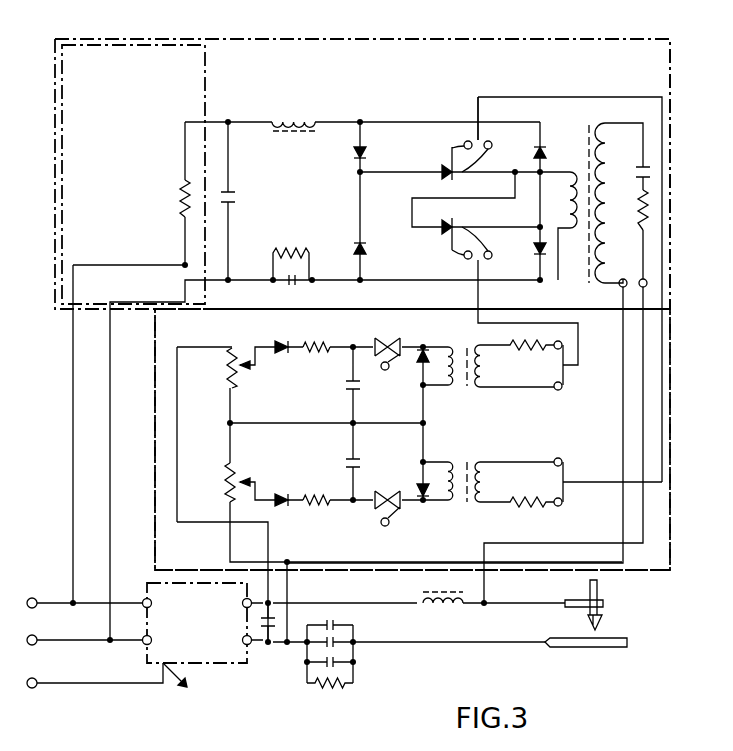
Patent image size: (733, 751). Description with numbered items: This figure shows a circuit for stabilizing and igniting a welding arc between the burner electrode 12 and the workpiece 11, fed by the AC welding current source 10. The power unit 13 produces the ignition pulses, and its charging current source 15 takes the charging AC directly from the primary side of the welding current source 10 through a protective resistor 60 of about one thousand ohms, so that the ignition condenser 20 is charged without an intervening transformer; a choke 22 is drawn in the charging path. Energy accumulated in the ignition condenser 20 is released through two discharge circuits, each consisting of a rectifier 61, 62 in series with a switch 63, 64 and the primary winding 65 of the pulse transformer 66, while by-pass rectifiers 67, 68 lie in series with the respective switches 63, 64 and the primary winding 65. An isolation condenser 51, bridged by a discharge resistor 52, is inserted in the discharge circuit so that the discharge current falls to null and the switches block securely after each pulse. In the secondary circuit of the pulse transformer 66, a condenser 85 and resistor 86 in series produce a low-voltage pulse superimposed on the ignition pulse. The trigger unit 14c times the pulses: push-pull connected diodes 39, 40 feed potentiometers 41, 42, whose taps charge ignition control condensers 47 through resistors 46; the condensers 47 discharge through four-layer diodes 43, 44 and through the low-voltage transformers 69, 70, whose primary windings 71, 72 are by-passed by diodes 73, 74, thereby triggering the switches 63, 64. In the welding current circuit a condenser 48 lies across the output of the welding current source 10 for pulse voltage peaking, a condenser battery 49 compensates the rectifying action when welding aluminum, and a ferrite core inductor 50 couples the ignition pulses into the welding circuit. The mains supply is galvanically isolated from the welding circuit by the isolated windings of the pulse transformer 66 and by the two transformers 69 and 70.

The AC welding current source 10 is at (222, 664).
The workpiece 11 is at (590, 648).
The burner electrode 12 is at (603, 603).
The power unit 13 is at (324, 77).
The trigger unit 14c is at (606, 436).
The charging current source 15 is at (104, 201).
The ignition condenser 20 is at (236, 198).
The choke coil 22 is at (285, 120).
The diode 39 is at (281, 341).
The diode 40 is at (281, 506).
The potentiometer 41 is at (242, 368).
The potentiometer 42 is at (242, 480).
The four-layer diode 43 is at (398, 339).
The four-layer diode 44 is at (382, 489).
The resistor 46 is at (318, 342).
The ignition control condenser 47 is at (346, 385).
The condenser 48 is at (274, 641).
The condenser battery 49 is at (349, 680).
The inductor 50 is at (425, 598).
The isolation condenser 51 is at (286, 278).
The discharge resistor 52 is at (294, 252).
The protective resistor 60 is at (182, 188).
The rectifier 61 is at (367, 154).
The rectifier 62 is at (547, 154).
The switch 63 is at (442, 168).
The switch 64 is at (440, 234).
The primary winding 65 is at (566, 212).
The pulse transformer 66 is at (588, 128).
The by-pass rectifier 67 is at (366, 250).
The by-pass rectifier 68 is at (535, 254).
The transformer 69 is at (482, 389).
The transformer 70 is at (484, 462).
The primary winding 71 is at (452, 388).
The primary winding 72 is at (452, 462).
The diode 73 is at (416, 366).
The diode 74 is at (425, 504).
The condenser 85 is at (636, 172).
The resistor 86 is at (638, 220).